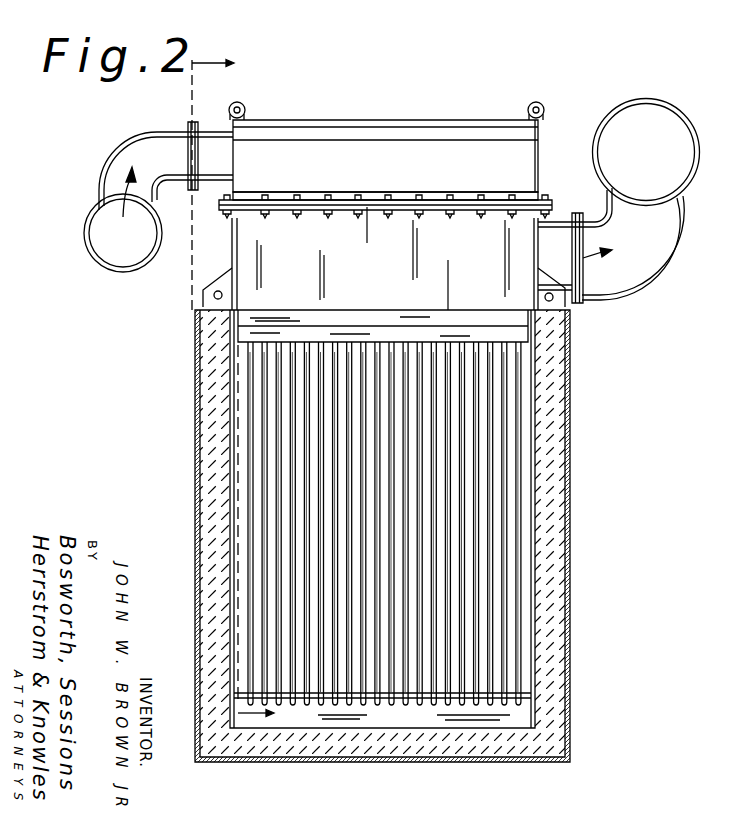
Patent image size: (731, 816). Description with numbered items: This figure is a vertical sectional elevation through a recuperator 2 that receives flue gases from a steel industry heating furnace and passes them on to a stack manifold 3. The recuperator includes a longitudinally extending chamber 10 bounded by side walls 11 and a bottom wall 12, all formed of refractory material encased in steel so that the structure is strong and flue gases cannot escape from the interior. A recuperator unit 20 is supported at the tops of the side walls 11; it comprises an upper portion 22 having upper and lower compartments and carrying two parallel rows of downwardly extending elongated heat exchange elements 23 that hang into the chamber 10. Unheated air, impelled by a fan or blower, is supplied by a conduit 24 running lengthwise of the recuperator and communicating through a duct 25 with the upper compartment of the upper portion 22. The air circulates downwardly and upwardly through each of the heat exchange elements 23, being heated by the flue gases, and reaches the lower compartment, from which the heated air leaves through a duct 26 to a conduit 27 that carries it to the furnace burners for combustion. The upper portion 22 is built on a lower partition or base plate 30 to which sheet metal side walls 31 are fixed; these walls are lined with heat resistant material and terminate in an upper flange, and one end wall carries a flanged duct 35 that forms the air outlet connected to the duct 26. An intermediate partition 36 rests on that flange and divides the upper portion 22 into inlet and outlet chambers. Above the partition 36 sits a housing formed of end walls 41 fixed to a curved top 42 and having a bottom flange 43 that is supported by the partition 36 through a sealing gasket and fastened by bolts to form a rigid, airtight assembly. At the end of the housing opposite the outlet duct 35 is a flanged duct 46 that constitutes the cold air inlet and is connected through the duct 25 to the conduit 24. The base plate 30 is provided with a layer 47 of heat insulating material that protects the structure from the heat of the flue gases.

The recuperator 2 is at (578, 541).
The stack manifold 3 is at (239, 391).
The chamber 10 is at (528, 612).
The side walls 11 is at (200, 495).
The bottom wall 12 is at (395, 755).
The recuperator unit 20 is at (459, 118).
The upper portion 22 is at (233, 246).
The heat exchange elements 23 is at (524, 468).
The conduit 24 is at (92, 243).
The duct 25 is at (134, 150).
The duct 26 is at (660, 278).
The conduit 27 is at (663, 106).
The base plate 30 is at (372, 310).
The side walls 31 is at (388, 275).
The flanged duct 35 is at (578, 305).
The intermediate partition 36 is at (342, 211).
The end walls 41 is at (540, 155).
The curved top 42 is at (380, 132).
The bottom flange 43 is at (372, 200).
The flanged duct 46 is at (198, 120).
The layer of heat insulating material 47 is at (455, 318).